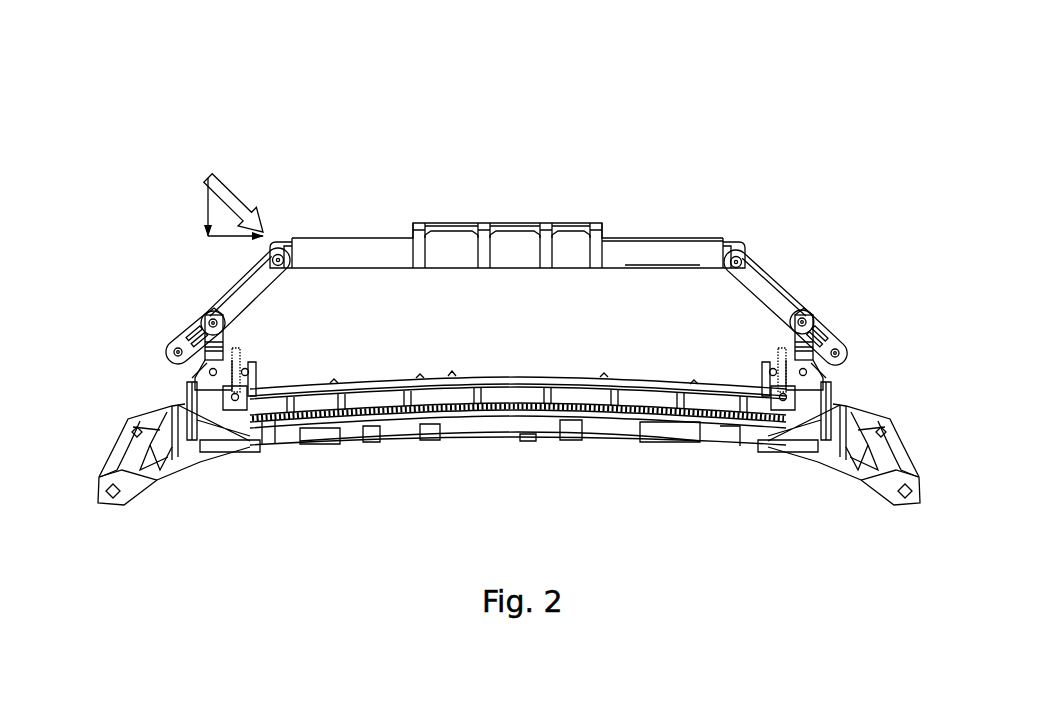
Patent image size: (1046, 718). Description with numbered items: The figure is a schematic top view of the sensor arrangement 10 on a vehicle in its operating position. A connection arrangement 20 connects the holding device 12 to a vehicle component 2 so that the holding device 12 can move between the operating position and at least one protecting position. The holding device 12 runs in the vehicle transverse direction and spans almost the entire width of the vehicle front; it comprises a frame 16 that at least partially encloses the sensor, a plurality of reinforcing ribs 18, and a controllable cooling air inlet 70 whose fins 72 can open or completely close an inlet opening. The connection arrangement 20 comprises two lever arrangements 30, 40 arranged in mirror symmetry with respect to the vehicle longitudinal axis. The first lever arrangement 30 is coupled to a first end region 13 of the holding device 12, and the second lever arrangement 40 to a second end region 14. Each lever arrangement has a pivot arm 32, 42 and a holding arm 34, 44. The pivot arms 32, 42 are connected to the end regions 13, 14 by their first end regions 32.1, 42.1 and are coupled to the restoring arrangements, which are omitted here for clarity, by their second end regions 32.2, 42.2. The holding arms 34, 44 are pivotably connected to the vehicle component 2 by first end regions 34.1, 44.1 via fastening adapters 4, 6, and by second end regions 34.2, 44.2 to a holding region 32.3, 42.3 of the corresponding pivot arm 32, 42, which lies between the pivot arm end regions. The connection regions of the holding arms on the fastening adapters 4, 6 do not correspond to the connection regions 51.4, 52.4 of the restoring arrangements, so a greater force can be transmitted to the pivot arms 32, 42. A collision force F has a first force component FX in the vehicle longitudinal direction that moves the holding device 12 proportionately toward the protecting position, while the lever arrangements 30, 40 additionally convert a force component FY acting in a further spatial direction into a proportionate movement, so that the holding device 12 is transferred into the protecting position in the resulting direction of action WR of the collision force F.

The vehicle component 2 is at (488, 438).
The fastening adapter 4 is at (207, 446).
The fastening adapter 6 is at (803, 446).
The sensor arrangement 10 is at (802, 158).
The holding device 12 is at (520, 200).
The first end region 13 is at (305, 223).
The second end region 14 is at (763, 224).
The frame 16 is at (455, 226).
The reinforcing ribs 18 is at (415, 222).
The connection arrangement 20 is at (503, 277).
The first lever arrangement 30 is at (158, 245).
The pivot arm 32 is at (218, 280).
The first end region 32.1 is at (278, 252).
The second end region 32.2 is at (176, 352).
The holding region 32.3 is at (180, 318).
The holding arm 34 is at (228, 333).
The first end region 34.1 is at (208, 372).
The second end region 34.2 is at (206, 313).
The second lever arrangement 40 is at (830, 245).
The pivot arm 42 is at (775, 268).
The first end region 42.1 is at (740, 252).
The second end region 42.2 is at (840, 352).
The holding region 42.3 is at (832, 326).
The holding arm 44 is at (790, 333).
The first end region 44.1 is at (808, 372).
The second end region 44.2 is at (828, 322).
The connection region 51.4 is at (250, 372).
The connection region 52.4 is at (768, 372).
The cooling air inlet 70 is at (668, 215).
The fins 72 is at (635, 250).
The collision force F is at (244, 177).
The resulting direction of action WR is at (237, 186).
The first force component FX is at (206, 214).
The force component FY is at (232, 242).